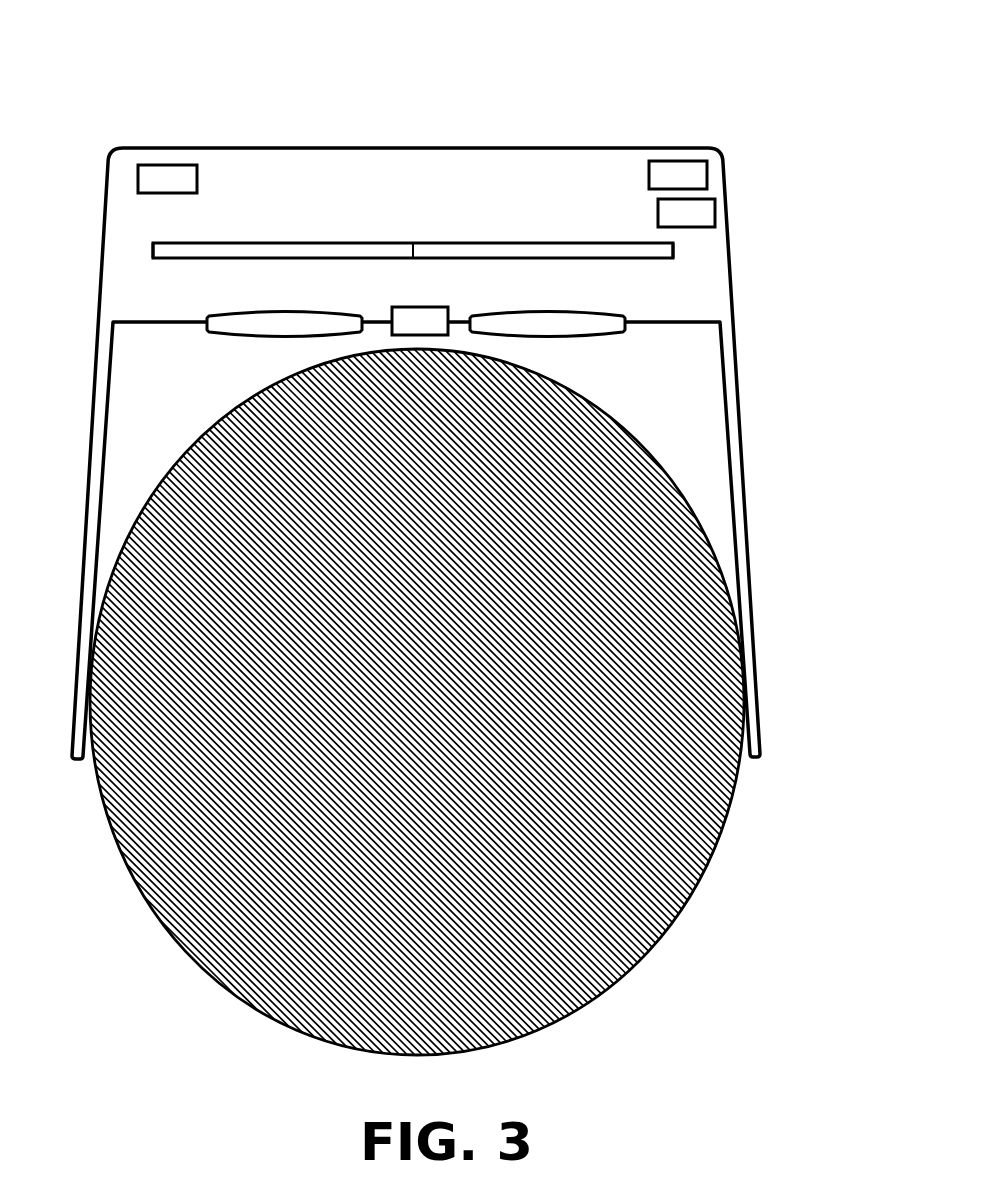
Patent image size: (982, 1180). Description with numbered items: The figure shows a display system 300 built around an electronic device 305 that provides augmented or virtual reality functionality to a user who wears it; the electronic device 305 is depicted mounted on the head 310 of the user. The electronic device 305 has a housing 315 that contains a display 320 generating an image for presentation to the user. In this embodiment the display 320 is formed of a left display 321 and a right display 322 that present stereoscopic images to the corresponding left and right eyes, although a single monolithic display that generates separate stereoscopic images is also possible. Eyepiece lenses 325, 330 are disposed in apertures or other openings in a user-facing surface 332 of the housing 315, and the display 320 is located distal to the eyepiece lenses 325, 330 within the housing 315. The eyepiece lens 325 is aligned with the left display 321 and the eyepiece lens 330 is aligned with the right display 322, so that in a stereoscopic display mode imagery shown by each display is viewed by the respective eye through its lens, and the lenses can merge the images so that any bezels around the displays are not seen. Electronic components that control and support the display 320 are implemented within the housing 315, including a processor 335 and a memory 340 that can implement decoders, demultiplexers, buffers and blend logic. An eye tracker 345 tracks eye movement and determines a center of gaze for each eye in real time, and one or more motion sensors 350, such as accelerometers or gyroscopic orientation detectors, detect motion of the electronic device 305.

The display system 300 is at (780, 51).
The electronic device 305 is at (503, 125).
The head 310 is at (103, 829).
The housing 315 is at (97, 281).
The display 320 is at (433, 232).
The left display 321 is at (175, 262).
The right display 322 is at (656, 259).
The eyepiece lens 325 is at (238, 338).
The eyepiece lens 330 is at (592, 338).
The user-facing surface 332 is at (136, 327).
The processor 335 is at (678, 175).
The memory 340 is at (686, 213).
The eye tracker 345 is at (420, 321).
The motion sensors 350 is at (167, 179).